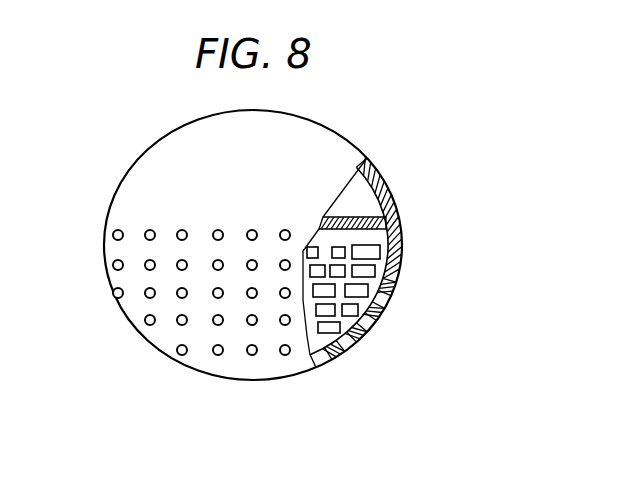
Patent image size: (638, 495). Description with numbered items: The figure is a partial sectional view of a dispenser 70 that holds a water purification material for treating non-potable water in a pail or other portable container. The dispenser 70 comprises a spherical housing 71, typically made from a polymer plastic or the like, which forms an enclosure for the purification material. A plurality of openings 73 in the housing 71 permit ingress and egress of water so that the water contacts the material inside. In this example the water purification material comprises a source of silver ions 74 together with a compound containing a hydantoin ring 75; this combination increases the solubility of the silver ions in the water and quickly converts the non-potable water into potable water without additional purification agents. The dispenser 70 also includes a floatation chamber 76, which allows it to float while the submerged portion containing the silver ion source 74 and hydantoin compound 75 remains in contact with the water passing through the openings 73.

The dispenser 70 is at (397, 159).
The spherical housing 71 is at (314, 135).
The openings 73 is at (372, 302).
The source of silver ions 74 is at (333, 267).
The compound containing a hydantoin ring 75 is at (380, 308).
The floatation chamber 76 is at (357, 197).